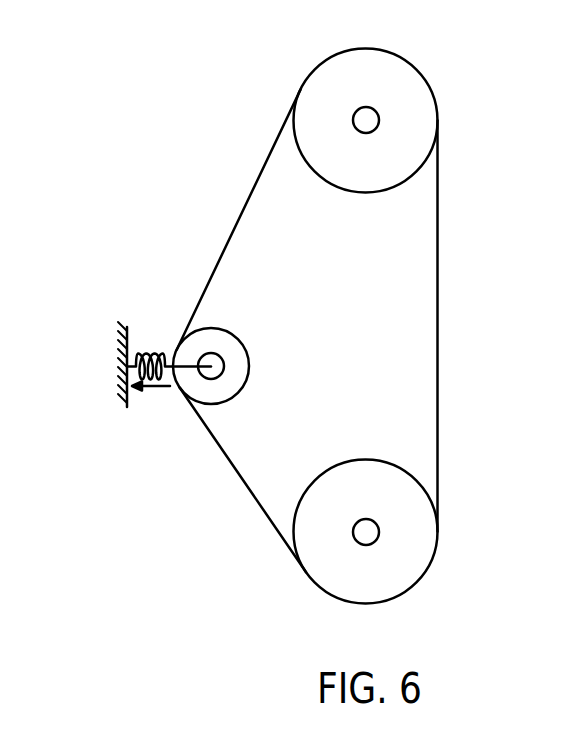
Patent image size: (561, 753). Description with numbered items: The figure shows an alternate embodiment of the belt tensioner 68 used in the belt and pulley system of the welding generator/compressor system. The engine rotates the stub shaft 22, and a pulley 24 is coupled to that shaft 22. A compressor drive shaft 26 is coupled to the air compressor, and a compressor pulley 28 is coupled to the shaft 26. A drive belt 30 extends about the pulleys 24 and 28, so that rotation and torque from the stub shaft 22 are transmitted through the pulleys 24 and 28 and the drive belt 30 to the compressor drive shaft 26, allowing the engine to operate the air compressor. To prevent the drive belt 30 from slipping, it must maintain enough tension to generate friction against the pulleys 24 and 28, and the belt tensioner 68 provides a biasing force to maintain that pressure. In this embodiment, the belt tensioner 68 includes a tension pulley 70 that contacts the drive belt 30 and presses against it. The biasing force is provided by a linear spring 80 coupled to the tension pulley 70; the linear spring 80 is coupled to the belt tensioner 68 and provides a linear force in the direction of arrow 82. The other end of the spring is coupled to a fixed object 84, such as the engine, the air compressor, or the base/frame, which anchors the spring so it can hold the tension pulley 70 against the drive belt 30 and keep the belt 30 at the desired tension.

The stub shaft 22 is at (368, 113).
The pulley 24 is at (387, 62).
The compressor drive shaft 26 is at (370, 532).
The compressor pulley 28 is at (397, 588).
The drive belt 30 is at (438, 326).
The belt tensioner 68 is at (172, 321).
The tension pulley 70 is at (212, 390).
The linear spring 80 is at (148, 353).
The arrow 82 is at (160, 392).
The fixed object 84 is at (123, 401).